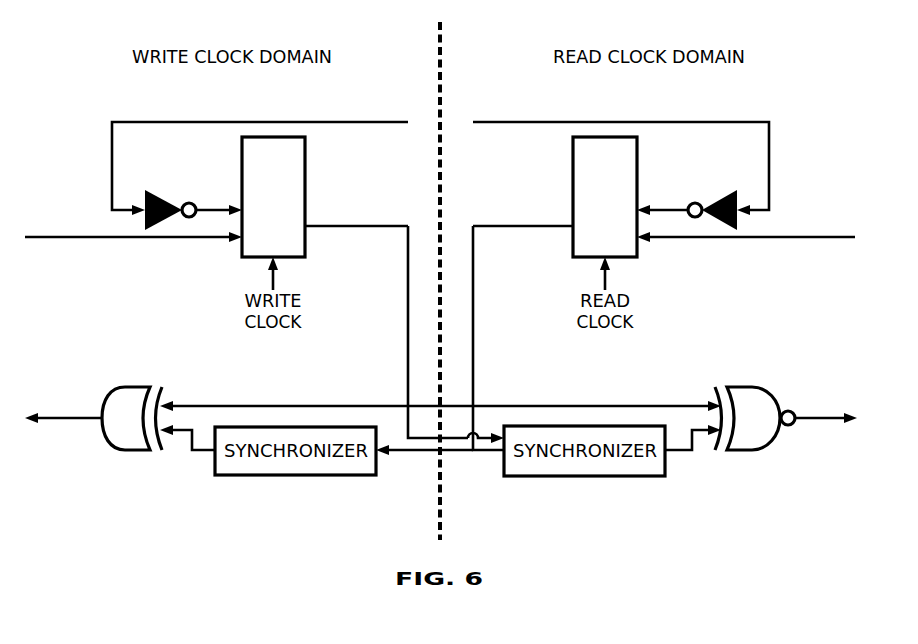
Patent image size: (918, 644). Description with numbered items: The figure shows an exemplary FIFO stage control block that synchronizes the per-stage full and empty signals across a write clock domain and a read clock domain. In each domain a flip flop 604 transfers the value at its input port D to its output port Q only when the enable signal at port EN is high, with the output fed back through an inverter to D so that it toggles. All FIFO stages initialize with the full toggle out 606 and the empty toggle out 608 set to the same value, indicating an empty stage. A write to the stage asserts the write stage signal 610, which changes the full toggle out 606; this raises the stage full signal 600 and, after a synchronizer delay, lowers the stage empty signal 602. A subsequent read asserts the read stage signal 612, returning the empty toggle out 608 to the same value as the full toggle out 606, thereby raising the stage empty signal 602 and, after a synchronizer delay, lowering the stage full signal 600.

The stage full signal 600 is at (93, 447).
The stage empty signal 602 is at (786, 447).
The flip flop 604 is at (439, 197).
The full toggle out 606 is at (360, 230).
The empty toggle out 608 is at (523, 230).
The write stage signal 610 is at (133, 257).
The read stage signal 612 is at (746, 257).